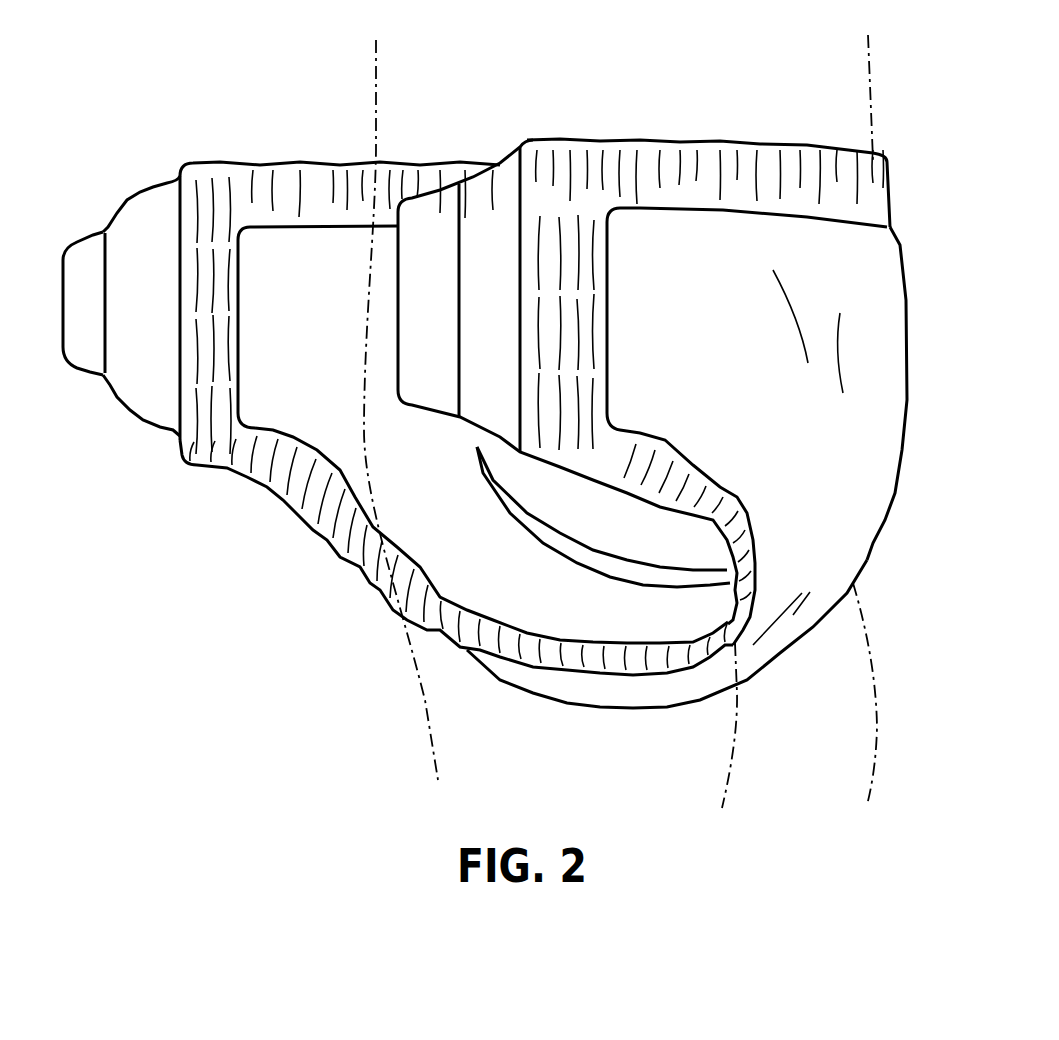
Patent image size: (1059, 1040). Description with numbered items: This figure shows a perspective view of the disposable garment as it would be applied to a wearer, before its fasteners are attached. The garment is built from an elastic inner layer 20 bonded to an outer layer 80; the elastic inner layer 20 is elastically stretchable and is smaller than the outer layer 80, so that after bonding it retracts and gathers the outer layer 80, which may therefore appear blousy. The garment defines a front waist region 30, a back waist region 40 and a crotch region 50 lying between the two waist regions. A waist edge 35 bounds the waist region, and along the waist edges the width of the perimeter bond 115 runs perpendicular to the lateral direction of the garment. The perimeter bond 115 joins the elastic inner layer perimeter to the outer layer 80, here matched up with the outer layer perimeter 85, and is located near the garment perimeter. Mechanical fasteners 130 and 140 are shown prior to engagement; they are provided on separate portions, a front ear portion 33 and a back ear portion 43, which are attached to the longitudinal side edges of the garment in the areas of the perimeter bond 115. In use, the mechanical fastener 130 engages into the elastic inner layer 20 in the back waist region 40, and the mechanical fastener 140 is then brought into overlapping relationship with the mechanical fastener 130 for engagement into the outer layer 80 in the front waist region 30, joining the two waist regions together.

The elastic inner layer 20 is at (315, 250).
The front waist region 30 is at (915, 253).
The front ear portion 33 is at (493, 200).
The waist edge 35 is at (738, 135).
The back waist region 40 is at (233, 132).
The back ear portion 43 is at (152, 202).
The crotch region 50 is at (776, 683).
The outer layer 80 is at (850, 488).
The outer layer perimeter 85 is at (737, 545).
The perimeter bond 115 is at (647, 447).
The mechanical fastener 130 is at (427, 217).
The mechanical fastener 140 is at (87, 257).